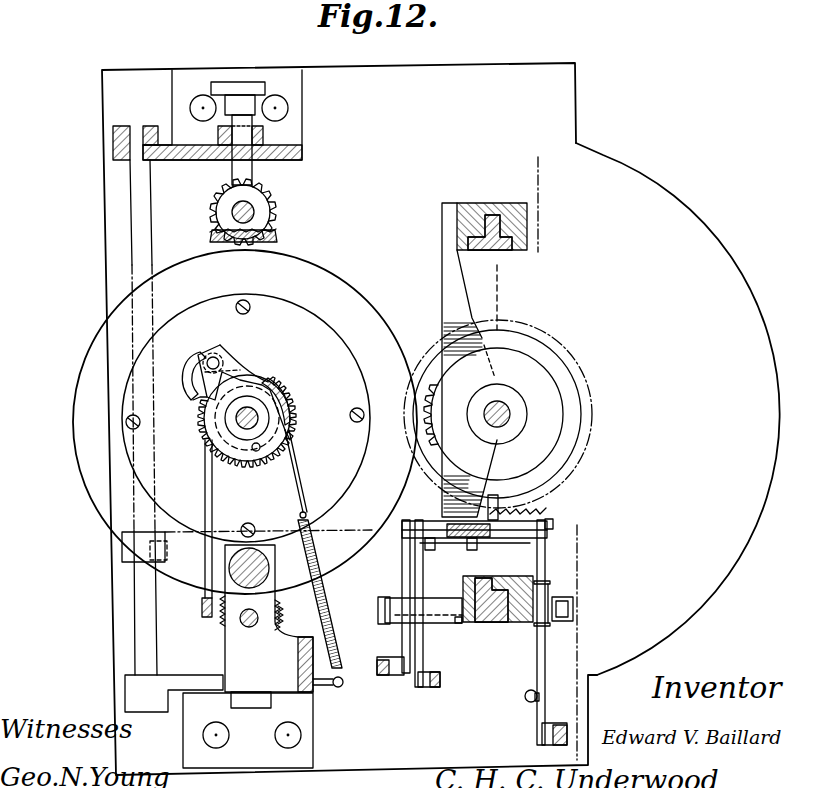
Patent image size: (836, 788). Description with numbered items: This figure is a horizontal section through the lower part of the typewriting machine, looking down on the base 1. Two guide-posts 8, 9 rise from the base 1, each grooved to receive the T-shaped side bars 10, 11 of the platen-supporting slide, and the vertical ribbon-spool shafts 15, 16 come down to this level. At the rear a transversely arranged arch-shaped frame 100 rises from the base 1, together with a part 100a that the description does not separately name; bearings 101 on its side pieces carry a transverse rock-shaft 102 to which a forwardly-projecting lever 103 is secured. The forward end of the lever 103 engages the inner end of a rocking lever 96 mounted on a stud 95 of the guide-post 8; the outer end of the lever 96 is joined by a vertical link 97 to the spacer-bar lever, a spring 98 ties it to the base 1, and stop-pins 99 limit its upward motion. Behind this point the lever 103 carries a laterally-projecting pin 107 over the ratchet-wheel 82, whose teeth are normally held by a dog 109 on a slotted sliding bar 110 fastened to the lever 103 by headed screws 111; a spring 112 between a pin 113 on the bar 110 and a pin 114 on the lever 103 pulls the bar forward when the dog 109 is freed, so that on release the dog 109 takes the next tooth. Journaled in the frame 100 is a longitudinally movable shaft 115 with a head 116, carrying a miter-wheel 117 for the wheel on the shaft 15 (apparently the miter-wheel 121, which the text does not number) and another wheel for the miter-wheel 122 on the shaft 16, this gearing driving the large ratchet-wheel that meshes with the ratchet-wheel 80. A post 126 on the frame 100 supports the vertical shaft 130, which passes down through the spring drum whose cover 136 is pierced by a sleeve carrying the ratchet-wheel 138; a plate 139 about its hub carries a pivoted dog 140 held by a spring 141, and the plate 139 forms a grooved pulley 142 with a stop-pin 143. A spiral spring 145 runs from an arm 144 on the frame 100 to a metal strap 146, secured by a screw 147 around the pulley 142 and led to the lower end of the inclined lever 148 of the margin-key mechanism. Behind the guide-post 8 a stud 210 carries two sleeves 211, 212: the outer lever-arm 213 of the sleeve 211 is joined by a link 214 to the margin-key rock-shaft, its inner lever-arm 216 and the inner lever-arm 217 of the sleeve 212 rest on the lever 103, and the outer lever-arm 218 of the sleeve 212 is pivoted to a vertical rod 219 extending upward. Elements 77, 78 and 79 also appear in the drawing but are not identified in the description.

The base 1 is at (678, 409).
The guide-post 8 is at (492, 624).
The guide-post 9 is at (469, 204).
The side bar 10 is at (498, 591).
The side bar 11 is at (558, 163).
The ribbon-spool shaft 15 is at (256, 211).
The ribbon-spool shaft 16 is at (250, 628).
The shaft 77 is at (485, 406).
The arm 78 is at (469, 360).
The hub 79 is at (508, 394).
The ratchet-wheel 80 is at (497, 414).
The ratchet-wheel 82 is at (565, 478).
The stud 95 is at (573, 604).
The rocking lever 96 is at (547, 544).
The vertical link 97 is at (556, 722).
The spring 98 is at (526, 702).
The stop-pins 99 is at (550, 585).
The arch-shaped frame 100 is at (302, 141).
The base block 100a is at (248, 718).
The bearings 101 is at (152, 126).
The rock-shaft 102 is at (138, 613).
The lever 103 is at (401, 532).
The pin 107 is at (499, 506).
The dog 109 is at (534, 512).
The sliding bar 110 is at (499, 541).
The headed screws or rivets 111 is at (430, 550).
The spring 112 is at (462, 540).
The pin 113 is at (430, 526).
The pin 114 is at (490, 540).
The shaft 115 is at (256, 173).
The head 116 is at (249, 82).
The miter-wheel 117 is at (214, 236).
The gear 121 is at (224, 201).
The miter-wheel 122 is at (279, 621).
The post 126 is at (314, 307).
The vertical shaft 130 is at (245, 407).
The drum-cover 136 is at (276, 306).
The ratchet-wheel 138 is at (263, 374).
The plate 139 is at (229, 364).
The pivoted dog 140 is at (194, 399).
The spring 141 is at (186, 370).
The grooved pulley 142 is at (293, 412).
The stop-pin 143 is at (256, 453).
The arm 144 is at (337, 688).
The spiral spring 145 is at (330, 627).
The metal strap 146 is at (294, 467).
The screw 147 is at (286, 390).
The inclined lever 148 is at (208, 618).
The stud 210 is at (385, 608).
The outer sleeve 211 is at (410, 680).
The inner sleeve 212 is at (459, 625).
The outer lever-arm 213 is at (402, 646).
The link 214 is at (389, 676).
The inner lever-arm 216 is at (402, 571).
The inner lever-arm 217 is at (423, 583).
The outer lever-arm 218 is at (423, 649).
The vertical rod 219 is at (431, 690).